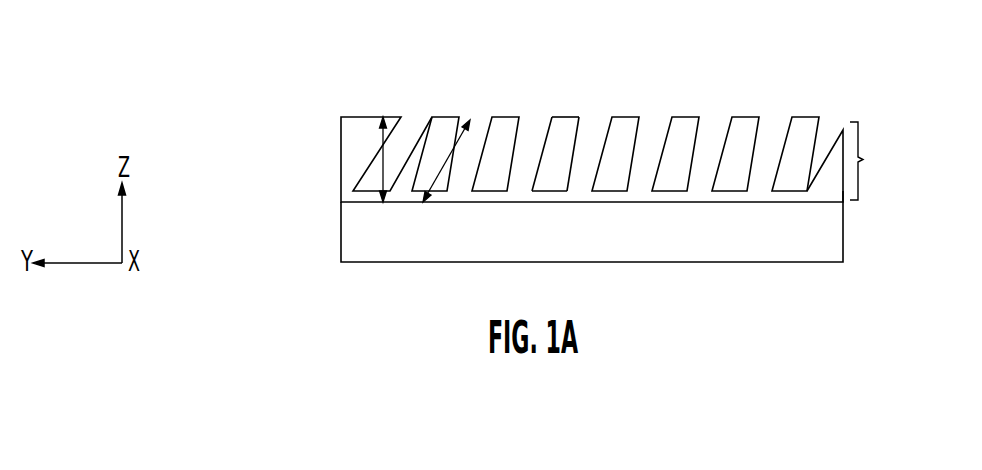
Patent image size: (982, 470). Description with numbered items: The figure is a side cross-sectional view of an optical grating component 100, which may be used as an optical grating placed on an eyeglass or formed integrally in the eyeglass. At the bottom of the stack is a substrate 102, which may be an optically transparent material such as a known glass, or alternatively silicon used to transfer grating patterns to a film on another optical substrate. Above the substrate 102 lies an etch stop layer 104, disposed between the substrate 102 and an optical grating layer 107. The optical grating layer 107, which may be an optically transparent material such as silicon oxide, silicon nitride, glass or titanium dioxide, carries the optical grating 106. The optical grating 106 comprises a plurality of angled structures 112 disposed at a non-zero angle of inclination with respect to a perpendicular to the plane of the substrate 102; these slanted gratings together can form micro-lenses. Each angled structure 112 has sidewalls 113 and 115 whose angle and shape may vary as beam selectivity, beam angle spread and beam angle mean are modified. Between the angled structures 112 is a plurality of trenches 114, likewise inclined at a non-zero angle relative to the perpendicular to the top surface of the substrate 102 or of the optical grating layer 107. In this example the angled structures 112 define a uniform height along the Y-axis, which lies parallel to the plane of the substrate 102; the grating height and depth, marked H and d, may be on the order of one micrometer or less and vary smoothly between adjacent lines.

The optical grating component 100 is at (291, 64).
The substrate 102 is at (350, 250).
The etch stop layer 104 is at (350, 194).
The optical grating 106 is at (350, 147).
The optical grating layer 107 is at (875, 161).
The angled structures 112 is at (624, 122).
The sidewall 113 is at (542, 130).
The trenches 114 is at (805, 162).
The sidewall 115 is at (577, 130).